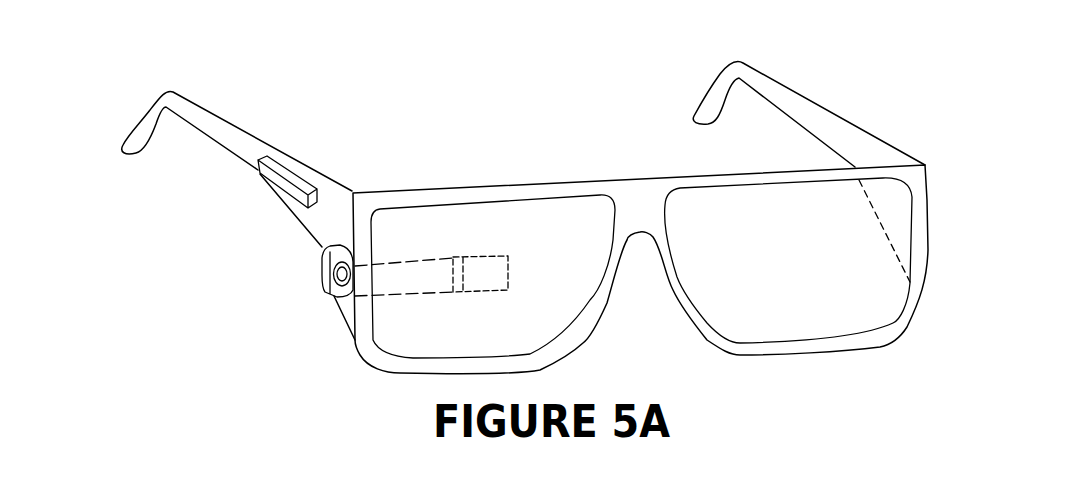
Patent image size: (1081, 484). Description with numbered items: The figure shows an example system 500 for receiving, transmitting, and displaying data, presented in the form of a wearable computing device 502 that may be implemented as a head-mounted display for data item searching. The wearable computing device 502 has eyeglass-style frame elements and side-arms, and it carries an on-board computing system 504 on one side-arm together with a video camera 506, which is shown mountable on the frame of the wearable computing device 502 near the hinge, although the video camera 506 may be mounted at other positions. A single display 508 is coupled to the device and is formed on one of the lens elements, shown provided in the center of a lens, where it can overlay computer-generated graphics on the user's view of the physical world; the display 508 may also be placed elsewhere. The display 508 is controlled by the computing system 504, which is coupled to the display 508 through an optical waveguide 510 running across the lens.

The system 500 is at (902, 92).
The wearable computing device 502 is at (990, 238).
The on-board computing system 504 is at (276, 181).
The video camera 506 is at (322, 274).
The display 508 is at (482, 291).
The optical waveguide 510 is at (397, 294).